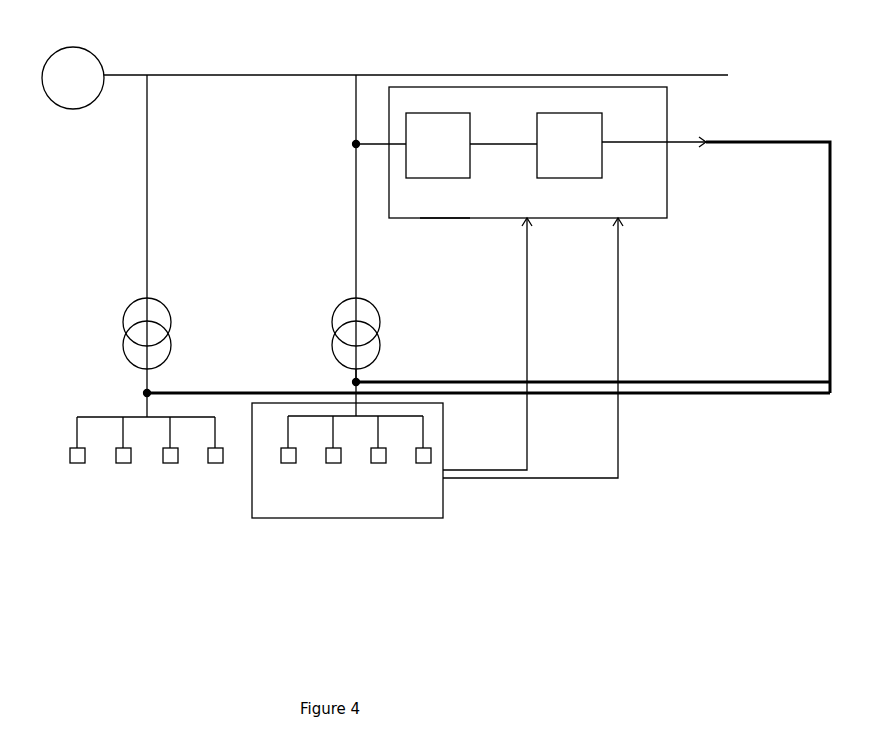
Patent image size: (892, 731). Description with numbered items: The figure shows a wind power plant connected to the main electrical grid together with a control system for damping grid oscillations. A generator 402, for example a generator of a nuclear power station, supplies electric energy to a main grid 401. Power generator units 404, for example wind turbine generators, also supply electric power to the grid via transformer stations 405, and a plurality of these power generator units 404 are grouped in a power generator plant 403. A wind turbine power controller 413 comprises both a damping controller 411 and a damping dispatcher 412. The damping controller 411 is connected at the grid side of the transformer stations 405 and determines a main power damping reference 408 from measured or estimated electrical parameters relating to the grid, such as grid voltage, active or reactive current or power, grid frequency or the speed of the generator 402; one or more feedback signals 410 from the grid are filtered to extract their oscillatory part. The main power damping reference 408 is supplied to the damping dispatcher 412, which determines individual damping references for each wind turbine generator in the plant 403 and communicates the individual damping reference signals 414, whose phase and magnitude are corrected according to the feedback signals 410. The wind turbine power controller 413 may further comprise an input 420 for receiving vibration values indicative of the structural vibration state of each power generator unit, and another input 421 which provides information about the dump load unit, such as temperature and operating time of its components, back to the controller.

The main grid 401 is at (223, 75).
The generator 402 is at (80, 48).
The power generator plant 403 is at (314, 519).
The power generator unit 404 is at (165, 463).
The transformer station 405 is at (165, 308).
The main power damping reference 408 is at (498, 142).
The feedback signal from the grid 410 is at (350, 148).
The damping controller 411 is at (438, 159).
The damping dispatcher 412 is at (581, 159).
The wind turbine power controller 413 is at (446, 212).
The individual damping reference signal 414 is at (700, 140).
The input for vibration values 420 is at (538, 238).
The input for dump load unit information 421 is at (622, 238).